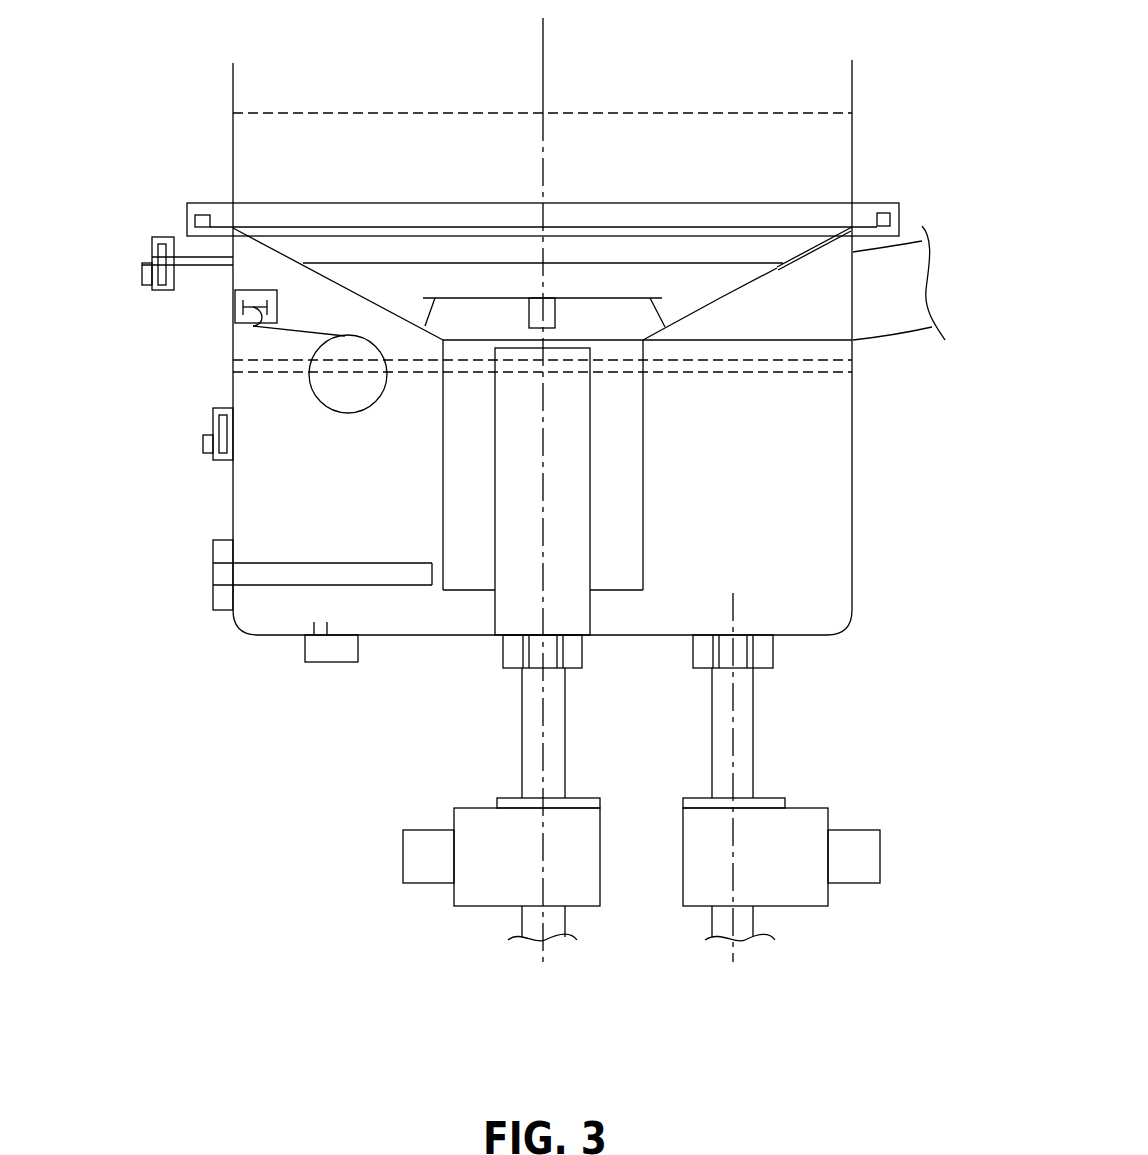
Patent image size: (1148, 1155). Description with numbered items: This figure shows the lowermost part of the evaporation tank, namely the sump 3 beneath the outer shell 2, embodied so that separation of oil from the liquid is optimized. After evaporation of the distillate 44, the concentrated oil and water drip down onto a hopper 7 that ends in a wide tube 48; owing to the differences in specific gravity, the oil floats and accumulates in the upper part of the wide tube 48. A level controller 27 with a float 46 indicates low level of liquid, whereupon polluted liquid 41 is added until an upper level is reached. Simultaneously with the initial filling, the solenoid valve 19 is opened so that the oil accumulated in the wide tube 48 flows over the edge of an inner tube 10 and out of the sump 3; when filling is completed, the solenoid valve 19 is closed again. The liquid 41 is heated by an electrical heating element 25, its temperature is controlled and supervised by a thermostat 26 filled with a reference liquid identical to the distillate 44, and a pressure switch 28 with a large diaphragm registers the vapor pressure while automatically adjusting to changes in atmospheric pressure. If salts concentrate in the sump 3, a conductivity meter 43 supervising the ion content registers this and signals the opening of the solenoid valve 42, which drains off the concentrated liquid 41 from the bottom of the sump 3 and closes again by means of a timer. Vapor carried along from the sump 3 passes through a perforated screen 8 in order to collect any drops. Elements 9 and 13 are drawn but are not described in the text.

The outer shell 2 is at (853, 135).
The sump 3 is at (760, 277).
The hopper 7 is at (722, 298).
The perforated screen 8 is at (830, 237).
The distributor cone 9 is at (605, 298).
The inner tube 10 is at (570, 523).
The cover plate 13 is at (889, 219).
The solenoid valve 19 is at (480, 823).
The electrical heating element 25 is at (318, 578).
The thermostat 26 is at (212, 433).
The level controller 27 is at (253, 326).
The pressure switch 28 is at (142, 262).
The polluted liquid 41 is at (797, 582).
The solenoid valve 42 is at (805, 822).
The conductivity meter 43 is at (310, 648).
The distillate 44 is at (265, 170).
The float 46 is at (345, 384).
The wide tube 48 is at (443, 467).